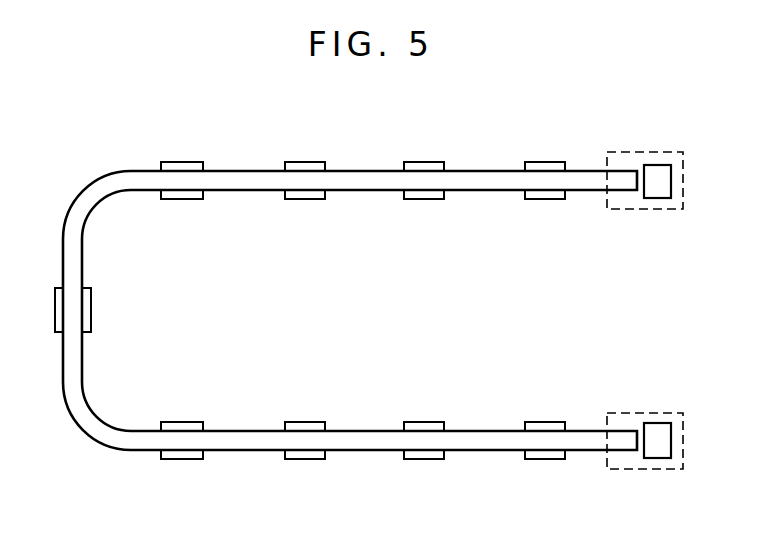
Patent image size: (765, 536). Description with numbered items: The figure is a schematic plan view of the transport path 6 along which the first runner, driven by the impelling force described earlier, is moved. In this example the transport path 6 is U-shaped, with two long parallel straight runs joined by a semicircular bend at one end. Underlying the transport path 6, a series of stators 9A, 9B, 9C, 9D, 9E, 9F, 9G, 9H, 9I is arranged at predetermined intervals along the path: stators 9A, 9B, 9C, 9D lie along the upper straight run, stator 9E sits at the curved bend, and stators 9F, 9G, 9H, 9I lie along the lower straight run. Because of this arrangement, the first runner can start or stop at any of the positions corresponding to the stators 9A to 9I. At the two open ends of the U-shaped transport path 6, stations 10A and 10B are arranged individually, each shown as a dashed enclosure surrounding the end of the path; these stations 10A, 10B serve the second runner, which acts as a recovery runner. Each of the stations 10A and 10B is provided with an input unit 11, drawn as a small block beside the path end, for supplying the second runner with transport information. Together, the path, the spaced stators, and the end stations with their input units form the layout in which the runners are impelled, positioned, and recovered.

The transport path 6 is at (247, 452).
The stator 9A is at (545, 160).
The stator 9B is at (425, 160).
The stator 9C is at (305, 160).
The stator 9D is at (182, 160).
The stator 9E is at (92, 308).
The stator 9F is at (183, 461).
The stator 9G is at (305, 461).
The stator 9H is at (425, 461).
The stator 9I is at (545, 461).
The station 10A is at (633, 211).
The station 10B is at (633, 471).
The input unit 11 is at (657, 170).